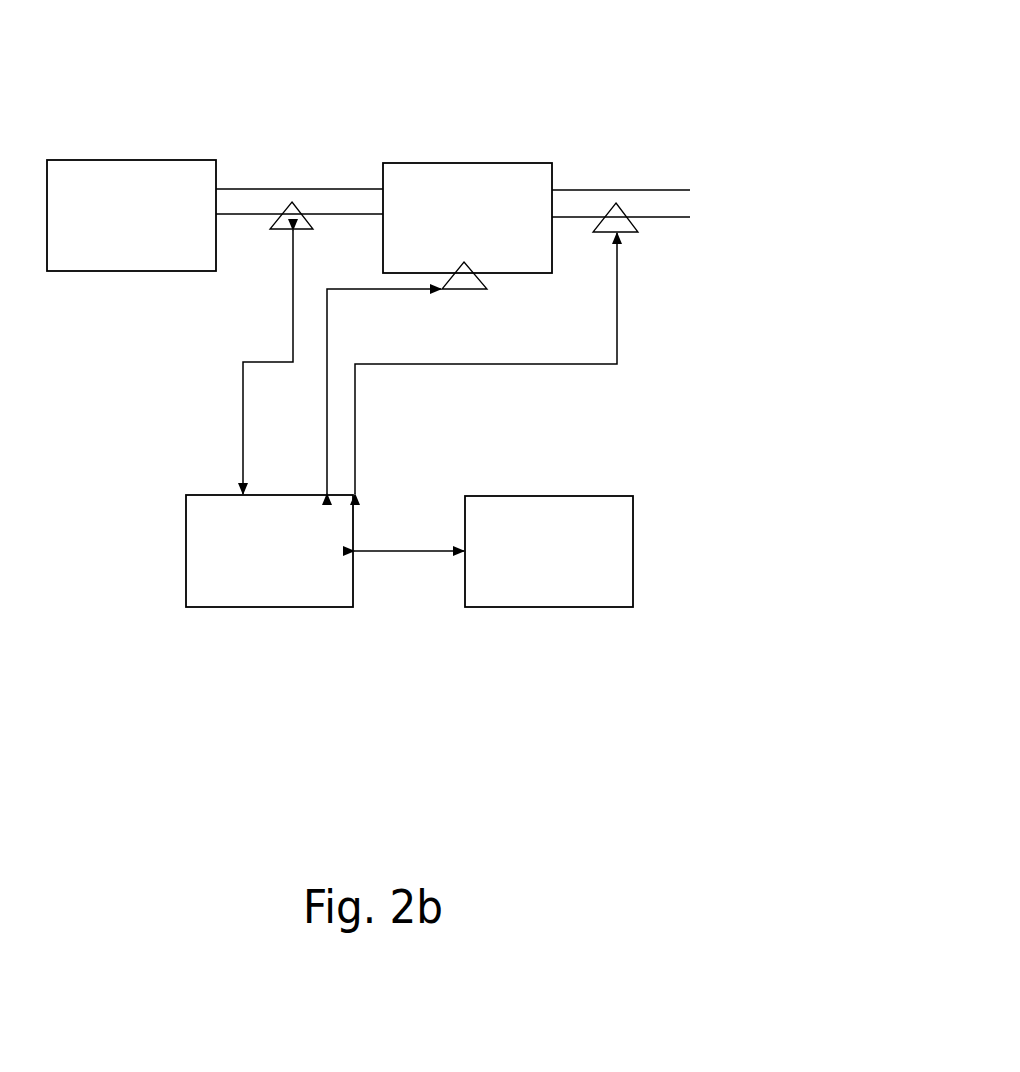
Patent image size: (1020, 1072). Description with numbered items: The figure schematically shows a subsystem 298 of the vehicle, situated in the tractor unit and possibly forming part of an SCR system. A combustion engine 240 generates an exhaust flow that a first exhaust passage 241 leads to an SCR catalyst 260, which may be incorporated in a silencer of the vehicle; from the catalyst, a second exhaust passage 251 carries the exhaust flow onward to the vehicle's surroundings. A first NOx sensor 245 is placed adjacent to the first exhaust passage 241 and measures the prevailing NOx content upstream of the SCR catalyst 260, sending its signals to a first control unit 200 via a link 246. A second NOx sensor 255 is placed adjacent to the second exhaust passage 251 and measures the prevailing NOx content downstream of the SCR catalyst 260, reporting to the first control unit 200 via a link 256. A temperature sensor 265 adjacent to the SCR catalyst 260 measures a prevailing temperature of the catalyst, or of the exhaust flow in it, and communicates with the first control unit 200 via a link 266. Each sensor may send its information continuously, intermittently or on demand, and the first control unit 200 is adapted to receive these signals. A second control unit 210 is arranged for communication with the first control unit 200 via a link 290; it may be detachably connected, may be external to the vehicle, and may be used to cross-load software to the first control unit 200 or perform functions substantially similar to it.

The subsystem 298 is at (455, 66).
The combustion engine 240 is at (131, 215).
The SCR catalyst 260 is at (467, 218).
The first exhaust passage 241 is at (240, 187).
The second exhaust passage 251 is at (588, 189).
The first NOx sensor 245 is at (270, 230).
The second NOx sensor 255 is at (630, 232).
The temperature sensor 265 is at (458, 292).
The first control unit 200 is at (269, 551).
The second control unit 210 is at (549, 551).
The link 246 is at (243, 385).
The link 266 is at (327, 332).
The link 256 is at (522, 365).
The link 290 is at (412, 553).